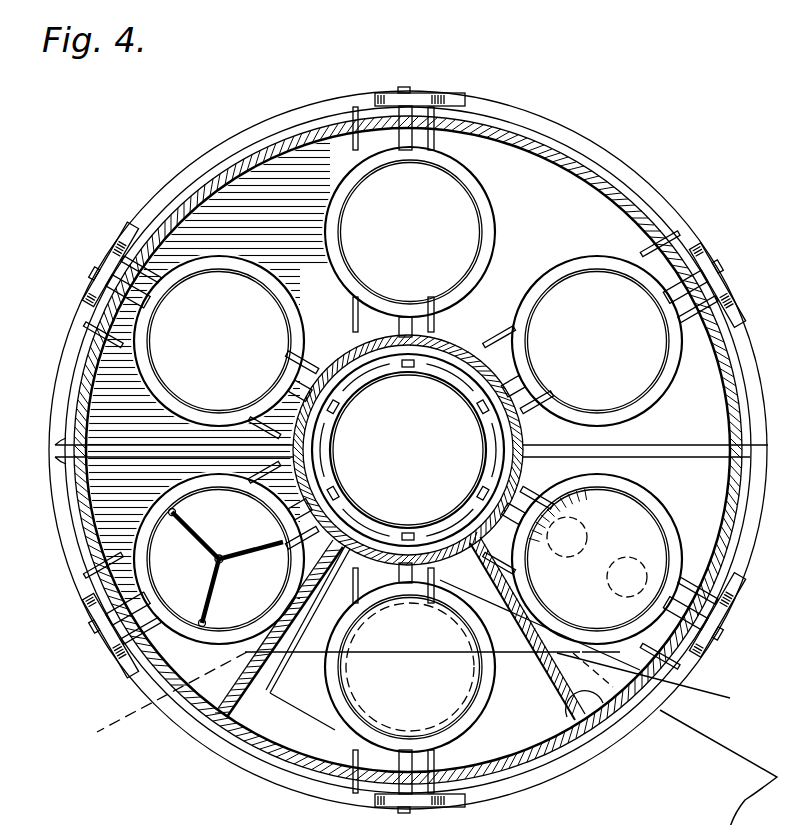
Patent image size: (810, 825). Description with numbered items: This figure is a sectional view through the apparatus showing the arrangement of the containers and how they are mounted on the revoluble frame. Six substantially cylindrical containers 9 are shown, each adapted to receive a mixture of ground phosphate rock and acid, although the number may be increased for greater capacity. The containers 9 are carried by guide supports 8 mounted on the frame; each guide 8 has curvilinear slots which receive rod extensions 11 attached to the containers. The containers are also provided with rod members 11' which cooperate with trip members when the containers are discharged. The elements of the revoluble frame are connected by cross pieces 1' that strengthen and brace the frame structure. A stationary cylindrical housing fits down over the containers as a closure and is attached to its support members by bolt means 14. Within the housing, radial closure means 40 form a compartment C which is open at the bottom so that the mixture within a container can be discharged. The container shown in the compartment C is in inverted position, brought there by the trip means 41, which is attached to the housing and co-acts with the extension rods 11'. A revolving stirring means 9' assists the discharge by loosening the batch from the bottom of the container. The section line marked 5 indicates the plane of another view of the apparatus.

The bolt means 14 is at (356, 110).
The guide support 8 is at (410, 100).
The rod extension 11 is at (401, 450).
The rod member 11' is at (374, 466).
The container 9 is at (408, 449).
The stirring means 9' is at (219, 559).
The trip means 41 is at (450, 553).
The cross piece 1' is at (411, 437).
The section line 5- 5 is at (91, 737).
The compartment C is at (260, 713).
The radial closure means 40 is at (607, 717).